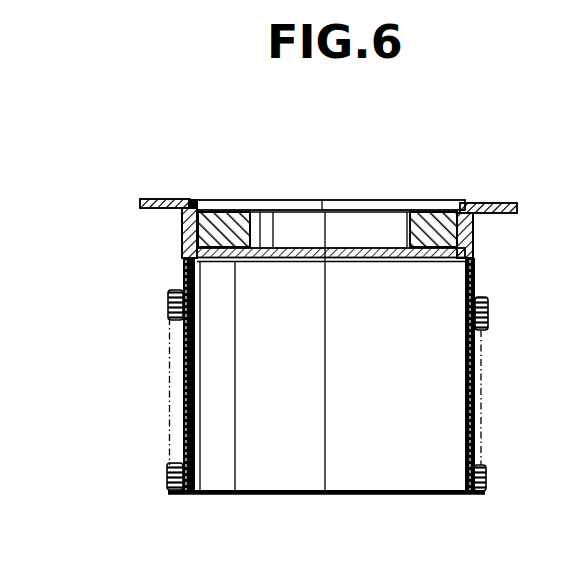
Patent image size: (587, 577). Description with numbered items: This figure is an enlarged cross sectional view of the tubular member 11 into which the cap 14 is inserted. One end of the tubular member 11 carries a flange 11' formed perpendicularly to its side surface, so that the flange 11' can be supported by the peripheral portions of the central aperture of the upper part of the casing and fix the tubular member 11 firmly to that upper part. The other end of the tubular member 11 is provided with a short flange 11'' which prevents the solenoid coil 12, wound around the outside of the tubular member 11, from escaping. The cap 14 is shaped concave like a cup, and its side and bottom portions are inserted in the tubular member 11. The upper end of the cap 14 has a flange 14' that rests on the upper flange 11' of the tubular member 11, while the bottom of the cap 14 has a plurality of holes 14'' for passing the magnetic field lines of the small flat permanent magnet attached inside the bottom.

The tubular member 11 is at (260, 351).
The flange 11' is at (276, 229).
The short flange 11'' is at (260, 514).
The solenoid coil 12 is at (168, 305).
The cap 14 is at (331, 164).
The flange 14' is at (328, 147).
The holes 14'' is at (331, 172).